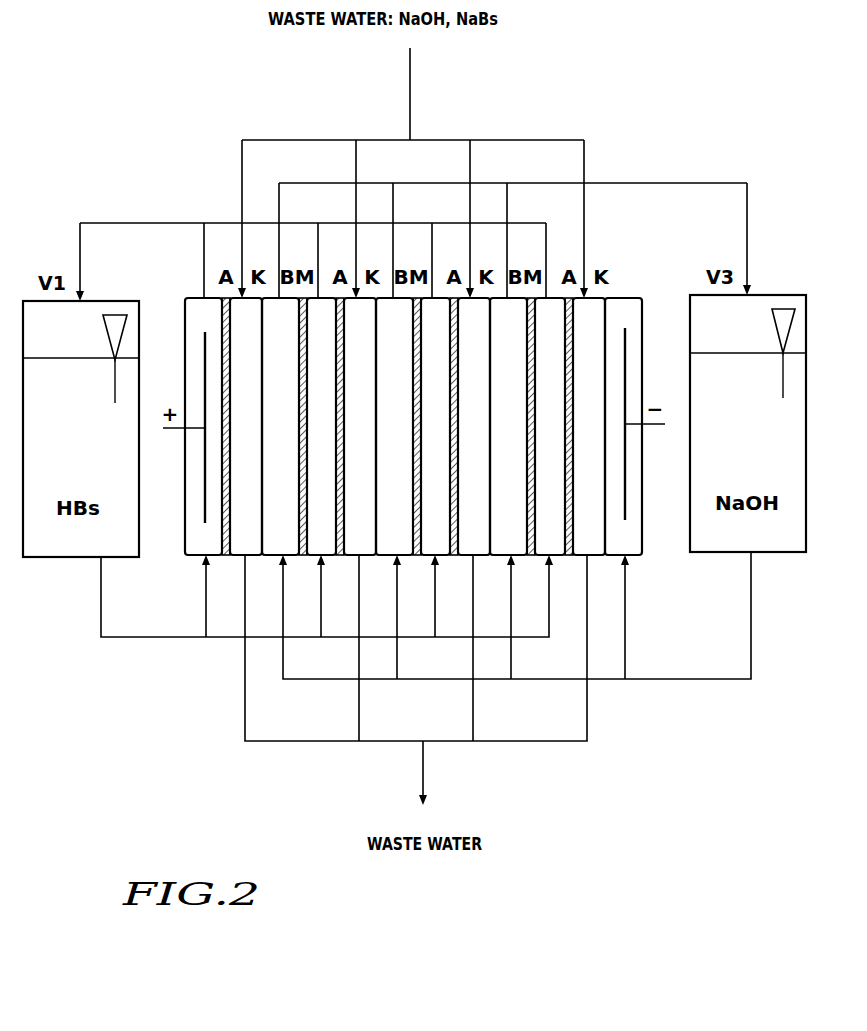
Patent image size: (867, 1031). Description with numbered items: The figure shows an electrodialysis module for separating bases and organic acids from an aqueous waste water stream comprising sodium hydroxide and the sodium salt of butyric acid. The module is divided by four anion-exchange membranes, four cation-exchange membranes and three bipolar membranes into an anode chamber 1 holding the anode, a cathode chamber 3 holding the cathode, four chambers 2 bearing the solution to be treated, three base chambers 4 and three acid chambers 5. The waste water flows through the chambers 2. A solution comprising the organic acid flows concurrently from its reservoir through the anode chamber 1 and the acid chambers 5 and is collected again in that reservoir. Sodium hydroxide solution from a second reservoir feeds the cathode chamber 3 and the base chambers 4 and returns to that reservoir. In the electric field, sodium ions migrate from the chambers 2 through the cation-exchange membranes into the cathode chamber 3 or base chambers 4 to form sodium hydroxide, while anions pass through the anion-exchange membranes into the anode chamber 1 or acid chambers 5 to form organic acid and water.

The anode chamber 1 is at (192, 426).
The chambers bearing solution to be treated 2 is at (417, 426).
The cathode chamber 3 is at (635, 426).
The base chambers 4 is at (394, 426).
The acid chambers 5 is at (436, 426).